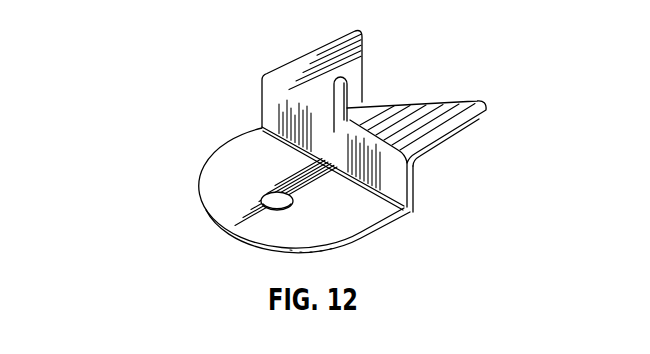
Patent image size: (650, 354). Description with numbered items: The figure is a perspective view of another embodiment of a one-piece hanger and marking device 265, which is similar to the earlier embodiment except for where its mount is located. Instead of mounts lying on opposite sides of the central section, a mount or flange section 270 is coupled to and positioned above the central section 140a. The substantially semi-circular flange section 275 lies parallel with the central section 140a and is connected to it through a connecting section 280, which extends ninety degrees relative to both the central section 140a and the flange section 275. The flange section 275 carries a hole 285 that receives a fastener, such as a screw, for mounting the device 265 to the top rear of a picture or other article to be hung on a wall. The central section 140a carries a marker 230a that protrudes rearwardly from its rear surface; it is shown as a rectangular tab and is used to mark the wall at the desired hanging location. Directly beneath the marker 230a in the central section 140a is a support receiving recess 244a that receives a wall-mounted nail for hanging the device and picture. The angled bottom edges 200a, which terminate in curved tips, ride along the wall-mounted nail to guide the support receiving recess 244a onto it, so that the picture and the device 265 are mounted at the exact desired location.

The one-piece hanger and marking device 265 is at (150, 50).
The central section 140a is at (292, 40).
The marker 230a is at (326, 103).
The support receiving recess 244a is at (364, 102).
The angled bottom edges 200a is at (466, 102).
The connecting section 280 is at (412, 180).
The mount or flange section 270 is at (178, 190).
The substantially semi-circular flange section 275 is at (220, 220).
The hole 285 is at (290, 209).